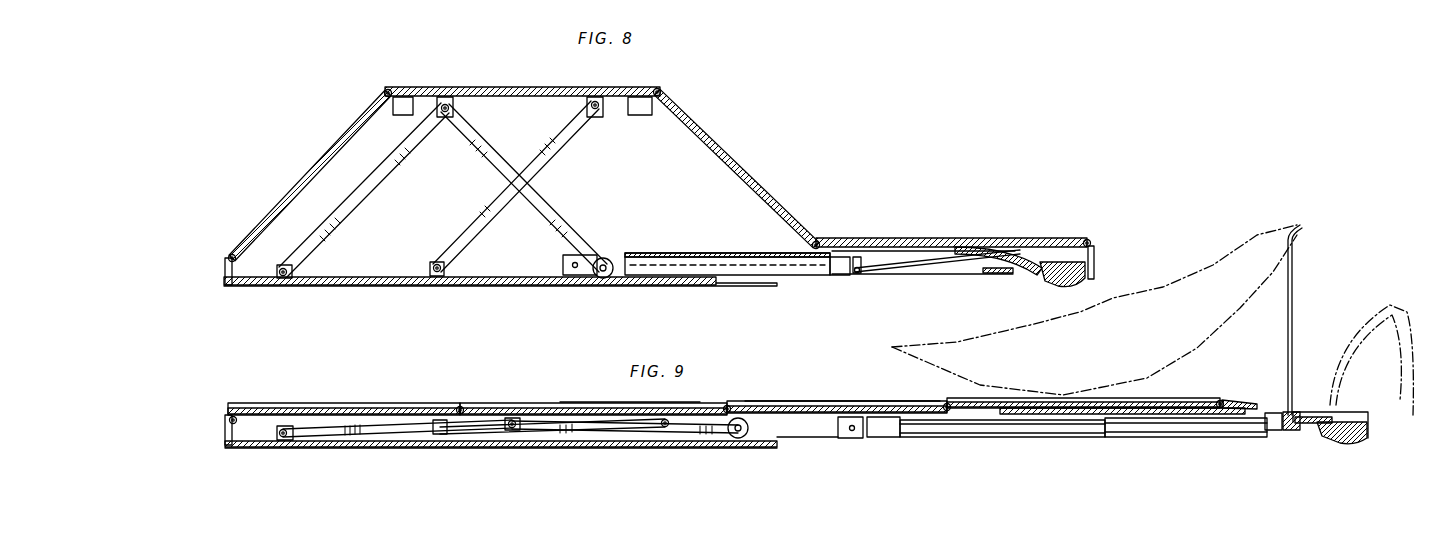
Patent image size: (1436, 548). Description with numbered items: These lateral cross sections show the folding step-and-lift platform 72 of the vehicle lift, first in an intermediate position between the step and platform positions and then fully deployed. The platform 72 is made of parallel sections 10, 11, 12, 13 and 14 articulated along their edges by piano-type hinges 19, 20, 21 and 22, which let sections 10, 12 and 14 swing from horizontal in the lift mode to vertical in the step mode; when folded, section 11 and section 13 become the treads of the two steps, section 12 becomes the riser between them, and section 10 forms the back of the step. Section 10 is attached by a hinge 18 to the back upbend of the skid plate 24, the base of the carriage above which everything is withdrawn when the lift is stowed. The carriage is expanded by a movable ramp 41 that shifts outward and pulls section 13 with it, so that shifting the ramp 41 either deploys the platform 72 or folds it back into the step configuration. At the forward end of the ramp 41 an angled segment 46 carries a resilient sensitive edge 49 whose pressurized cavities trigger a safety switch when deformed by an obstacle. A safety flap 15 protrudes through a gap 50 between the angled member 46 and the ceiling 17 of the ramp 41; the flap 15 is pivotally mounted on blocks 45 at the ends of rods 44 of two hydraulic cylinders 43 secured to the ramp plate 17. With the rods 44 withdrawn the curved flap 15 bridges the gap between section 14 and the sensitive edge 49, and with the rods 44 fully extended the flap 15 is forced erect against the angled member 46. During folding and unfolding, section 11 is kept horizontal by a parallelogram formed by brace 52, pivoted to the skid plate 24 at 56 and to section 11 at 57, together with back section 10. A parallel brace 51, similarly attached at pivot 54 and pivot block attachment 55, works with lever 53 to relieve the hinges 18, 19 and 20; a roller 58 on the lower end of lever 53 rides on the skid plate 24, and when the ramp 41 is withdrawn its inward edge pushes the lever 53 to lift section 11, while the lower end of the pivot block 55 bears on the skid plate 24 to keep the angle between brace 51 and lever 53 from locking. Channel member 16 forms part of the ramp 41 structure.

In FIG. 8, the platform section 10 is at (312, 162).
In FIG. 9, the platform section 10 is at (352, 402).
In FIG. 8, the platform section 11 is at (540, 86).
In FIG. 9, the platform section 11 is at (544, 402).
In FIG. 8, the platform section 12 is at (757, 167).
In FIG. 9, the platform section 12 is at (860, 401).
In FIG. 8, the platform section 13 is at (922, 238).
In FIG. 9, the platform section 13 is at (1062, 398).
In FIG. 8, the platform section 14 is at (1097, 258).
In FIG. 9, the platform section 14 is at (1242, 402).
In FIG. 8, the safety flap 15 is at (916, 271).
In FIG. 9, the safety flap 15 is at (1294, 285).
In FIG. 8, the channel member 16 is at (678, 256).
In FIG. 8, the roof of the ramp 17 is at (724, 253).
In FIG. 8, the hinge 18 is at (238, 258).
In FIG. 9, the hinge 18 is at (230, 417).
In FIG. 8, the piano-type hinge 19 is at (386, 91).
In FIG. 9, the piano-type hinge 19 is at (461, 405).
In FIG. 8, the piano-type hinge 20 is at (660, 90).
In FIG. 9, the piano-type hinge 20 is at (730, 405).
In FIG. 8, the piano-type hinge 21 is at (810, 245).
In FIG. 9, the piano-type hinge 21 is at (945, 403).
In FIG. 8, the piano-type hinge 22 is at (1090, 240).
In FIG. 9, the piano-type hinge 22 is at (1220, 400).
In FIG. 8, the skid plate 24 is at (460, 286).
In FIG. 9, the skid plate 24 is at (410, 449).
In FIG. 8, the ramp 41 is at (704, 253).
In FIG. 9, the ramp 41 is at (934, 438).
In FIG. 9, the hydraulic cylinder 43 is at (1050, 438).
In FIG. 9, the cylinder rod 44 is at (1152, 438).
In FIG. 9, the block 45 is at (1273, 412).
In FIG. 9, the angled segment 46 is at (1285, 436).
In FIG. 8, the sensitive edge 49 is at (1066, 284).
In FIG. 9, the sensitive edge 49 is at (1340, 444).
In FIG. 8, the gap 50 is at (977, 250).
In FIG. 8, the brace 51 is at (378, 197).
In FIG. 9, the brace 51 is at (356, 438).
In FIG. 8, the brace 52 is at (570, 158).
In FIG. 8, the lever 53 is at (486, 165).
In FIG. 9, the lever 53 is at (700, 434).
In FIG. 8, the pivot bracket 54 is at (290, 272).
In FIG. 9, the pivot bracket 54 is at (277, 435).
In FIG. 8, the pivot block attachment 55 is at (450, 108).
In FIG. 9, the pivot block attachment 55 is at (505, 436).
In FIG. 8, the pivot connection 56 is at (432, 264).
In FIG. 9, the pivot connection 56 is at (438, 436).
In FIG. 8, the pivot connection 57 is at (590, 106).
In FIG. 9, the pivot connection 57 is at (645, 452).
In FIG. 8, the roller 58 is at (606, 257).
In FIG. 9, the roller 58 is at (746, 437).
In FIG. 9, the lift platform 72 is at (606, 402).